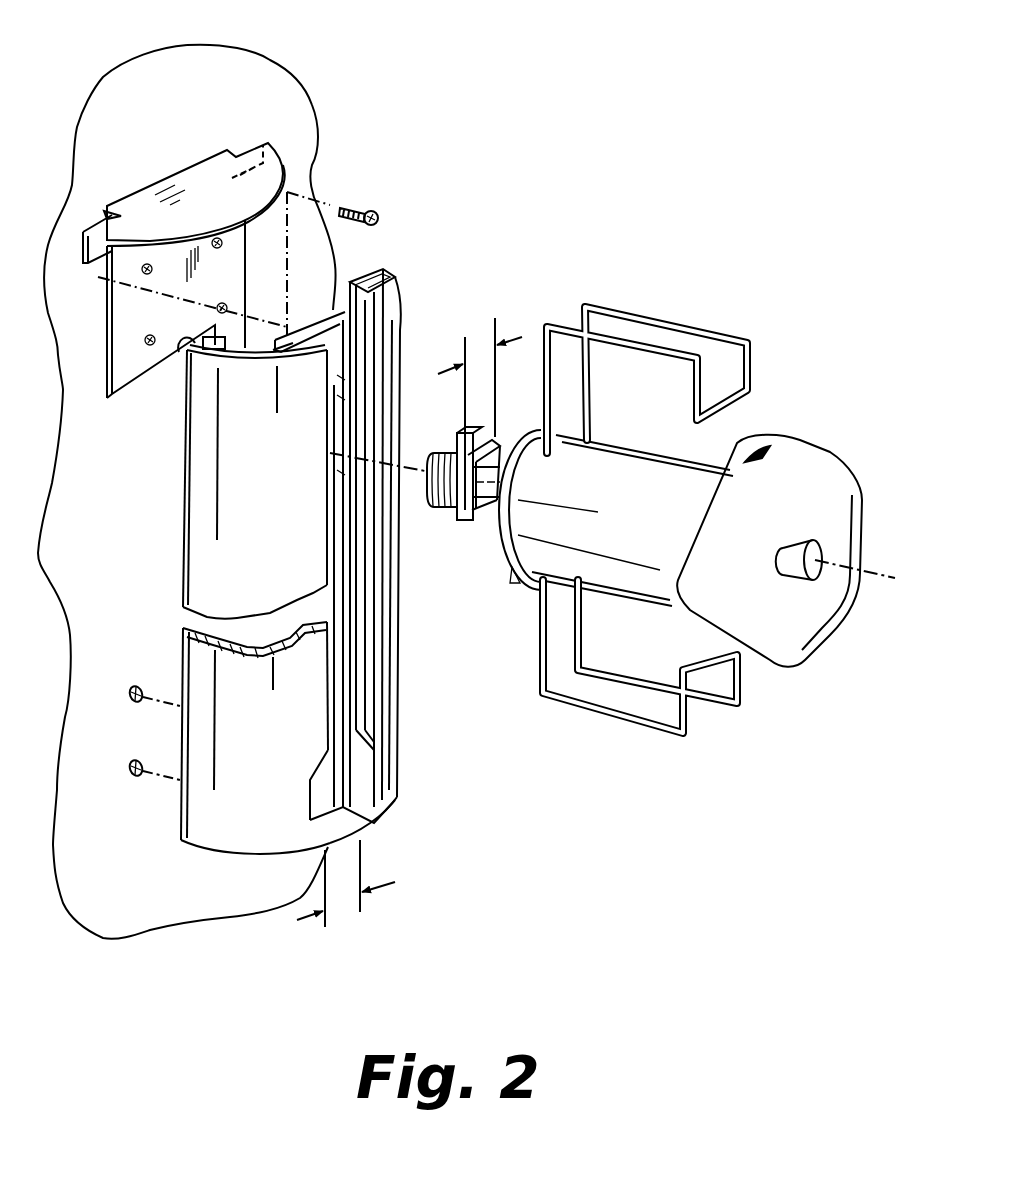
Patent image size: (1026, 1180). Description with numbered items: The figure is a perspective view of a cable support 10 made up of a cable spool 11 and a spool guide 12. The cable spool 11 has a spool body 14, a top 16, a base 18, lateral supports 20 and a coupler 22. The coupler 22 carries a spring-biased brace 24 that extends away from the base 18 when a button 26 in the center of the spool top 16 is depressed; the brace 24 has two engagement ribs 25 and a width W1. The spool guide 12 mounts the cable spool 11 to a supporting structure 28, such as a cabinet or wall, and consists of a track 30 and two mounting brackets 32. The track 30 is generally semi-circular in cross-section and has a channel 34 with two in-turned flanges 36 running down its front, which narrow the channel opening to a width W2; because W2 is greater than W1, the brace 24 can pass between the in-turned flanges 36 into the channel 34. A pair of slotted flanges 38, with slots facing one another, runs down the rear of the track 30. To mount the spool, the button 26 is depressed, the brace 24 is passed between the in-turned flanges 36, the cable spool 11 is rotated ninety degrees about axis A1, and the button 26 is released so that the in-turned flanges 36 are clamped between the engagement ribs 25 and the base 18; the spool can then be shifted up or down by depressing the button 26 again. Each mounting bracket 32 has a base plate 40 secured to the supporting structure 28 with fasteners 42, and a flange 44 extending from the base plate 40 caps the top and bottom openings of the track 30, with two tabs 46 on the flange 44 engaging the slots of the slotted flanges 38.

The cable support 10 is at (642, 90).
The cable spool 11 is at (592, 236).
The spool guide 12 is at (445, 183).
The spool body 14 is at (636, 482).
The top 16 is at (792, 468).
The base 18 is at (520, 583).
The lateral supports 20 is at (700, 310).
The coupler 22 is at (455, 532).
The spring-biased brace 24 is at (506, 462).
The engagement ribs 25 is at (504, 447).
The button 26 is at (790, 548).
The supporting structure 28 is at (136, 583).
The track 30 is at (419, 768).
The mounting brackets 32 is at (194, 150).
The channel 34 is at (318, 322).
The in-turned flanges 36 is at (378, 347).
The slotted flanges 38 is at (372, 262).
The base plate 40 is at (128, 372).
The fasteners 42 is at (351, 205).
The flange 44 is at (141, 208).
The tabs 46 is at (103, 230).
The width of brace W1 is at (480, 401).
The width between in-turned flanges W2 is at (346, 897).
The axis A1 is at (890, 578).